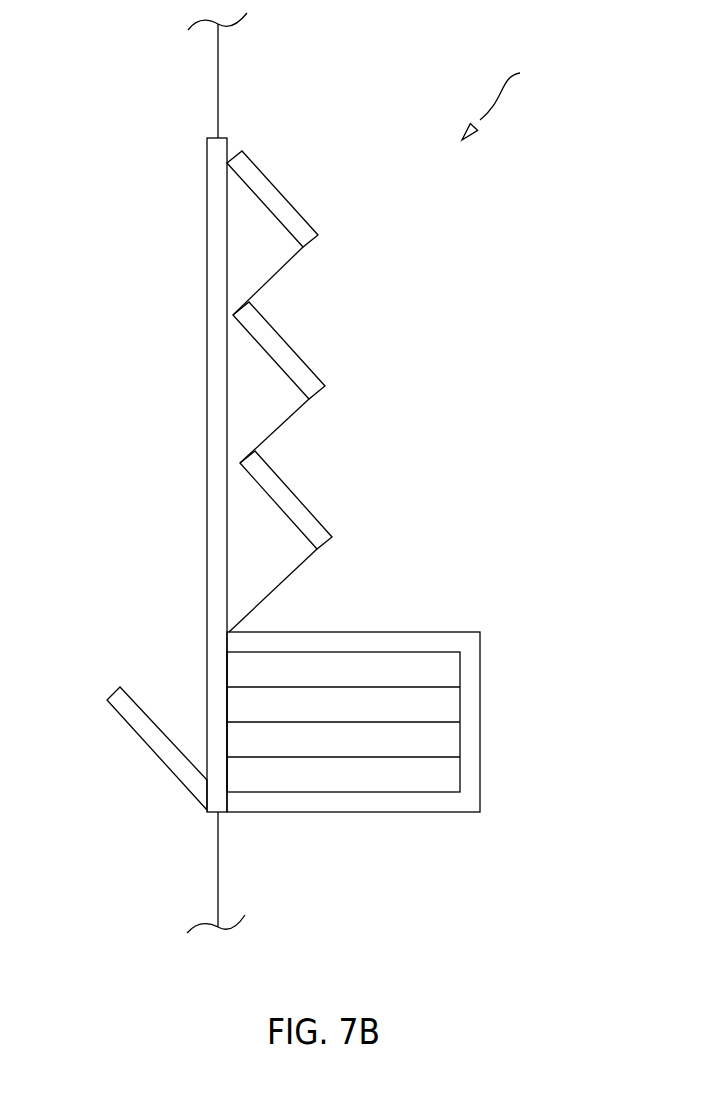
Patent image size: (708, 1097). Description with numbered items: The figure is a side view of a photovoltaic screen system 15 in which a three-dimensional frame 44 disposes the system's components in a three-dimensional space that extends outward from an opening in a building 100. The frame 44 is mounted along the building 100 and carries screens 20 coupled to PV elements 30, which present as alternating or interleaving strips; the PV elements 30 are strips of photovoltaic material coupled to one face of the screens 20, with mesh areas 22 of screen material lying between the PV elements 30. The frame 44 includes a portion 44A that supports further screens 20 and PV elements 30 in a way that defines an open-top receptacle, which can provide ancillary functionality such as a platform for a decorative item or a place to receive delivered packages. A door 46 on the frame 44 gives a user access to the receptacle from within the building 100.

The PV screen system 15 is at (506, 100).
The screen 20 is at (288, 266).
The mesh area 22 is at (268, 598).
The PV element 30 is at (280, 200).
The frame 44 is at (215, 288).
The frame portion 44A is at (458, 632).
The door 46 is at (123, 710).
The building 100 is at (218, 88).